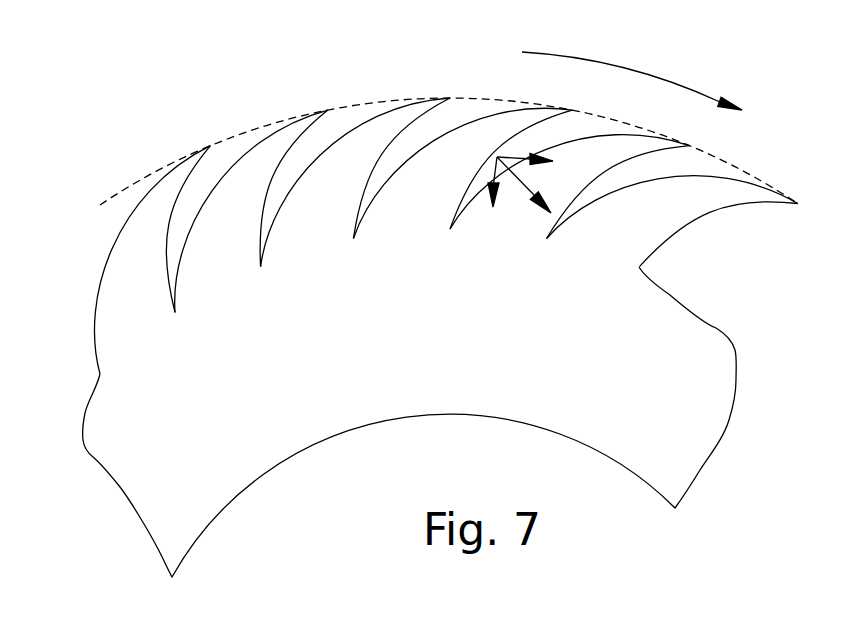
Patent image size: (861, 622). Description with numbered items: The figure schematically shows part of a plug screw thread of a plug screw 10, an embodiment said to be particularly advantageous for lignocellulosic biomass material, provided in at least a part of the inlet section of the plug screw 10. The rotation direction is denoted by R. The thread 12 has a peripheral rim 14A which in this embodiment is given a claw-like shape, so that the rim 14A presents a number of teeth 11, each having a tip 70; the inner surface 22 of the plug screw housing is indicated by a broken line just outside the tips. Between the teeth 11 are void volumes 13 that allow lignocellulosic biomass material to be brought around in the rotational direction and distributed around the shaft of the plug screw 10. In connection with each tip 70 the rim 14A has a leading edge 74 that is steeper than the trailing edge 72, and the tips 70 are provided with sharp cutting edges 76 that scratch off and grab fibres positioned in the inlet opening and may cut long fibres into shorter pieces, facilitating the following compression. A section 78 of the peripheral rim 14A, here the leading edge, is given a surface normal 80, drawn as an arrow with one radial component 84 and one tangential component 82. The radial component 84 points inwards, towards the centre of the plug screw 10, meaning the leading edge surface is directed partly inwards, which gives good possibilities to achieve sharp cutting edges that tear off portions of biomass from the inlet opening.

The plug screw 10 is at (162, 207).
The teeth 11 is at (308, 123).
The thread 12 is at (385, 138).
The void volumes 13 is at (223, 153).
The peripheral rim 14A is at (673, 204).
The inner surface of the plug screw housing 22 is at (268, 127).
The tip 70 is at (428, 103).
The trailing edge 72 is at (673, 178).
The leading edge 74 is at (710, 222).
The sharp cutting edge 76 is at (447, 102).
The section of the peripheral rim 78 is at (523, 137).
The surface normal 80 is at (551, 213).
The tangential component 82 is at (555, 163).
The radial component 84 is at (493, 207).
The rotation direction R is at (632, 81).